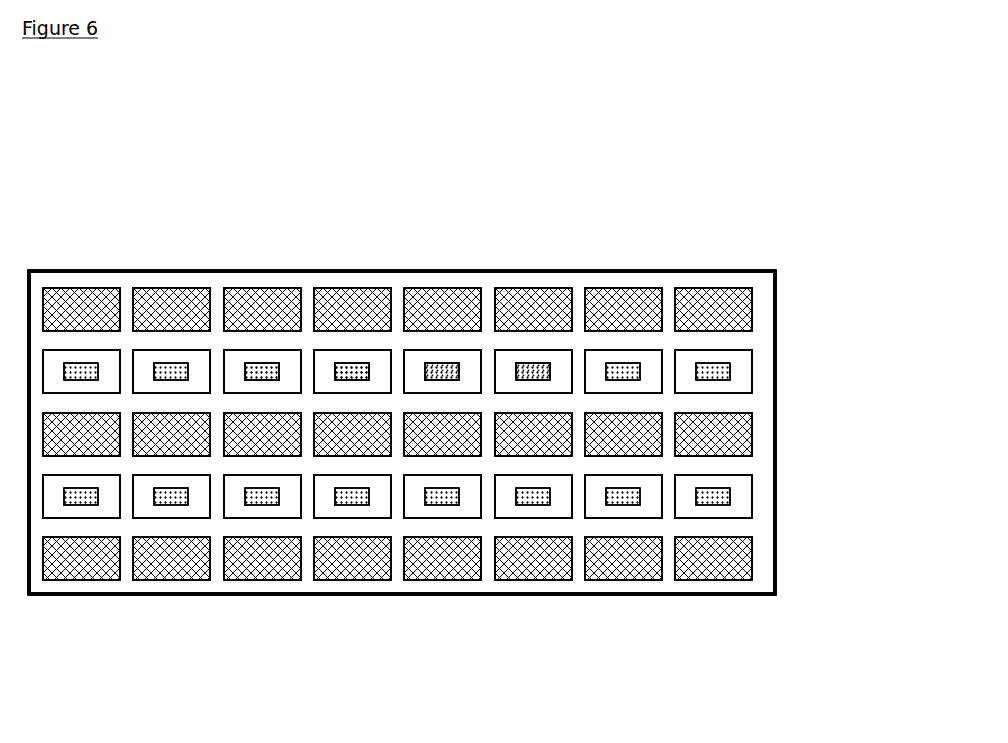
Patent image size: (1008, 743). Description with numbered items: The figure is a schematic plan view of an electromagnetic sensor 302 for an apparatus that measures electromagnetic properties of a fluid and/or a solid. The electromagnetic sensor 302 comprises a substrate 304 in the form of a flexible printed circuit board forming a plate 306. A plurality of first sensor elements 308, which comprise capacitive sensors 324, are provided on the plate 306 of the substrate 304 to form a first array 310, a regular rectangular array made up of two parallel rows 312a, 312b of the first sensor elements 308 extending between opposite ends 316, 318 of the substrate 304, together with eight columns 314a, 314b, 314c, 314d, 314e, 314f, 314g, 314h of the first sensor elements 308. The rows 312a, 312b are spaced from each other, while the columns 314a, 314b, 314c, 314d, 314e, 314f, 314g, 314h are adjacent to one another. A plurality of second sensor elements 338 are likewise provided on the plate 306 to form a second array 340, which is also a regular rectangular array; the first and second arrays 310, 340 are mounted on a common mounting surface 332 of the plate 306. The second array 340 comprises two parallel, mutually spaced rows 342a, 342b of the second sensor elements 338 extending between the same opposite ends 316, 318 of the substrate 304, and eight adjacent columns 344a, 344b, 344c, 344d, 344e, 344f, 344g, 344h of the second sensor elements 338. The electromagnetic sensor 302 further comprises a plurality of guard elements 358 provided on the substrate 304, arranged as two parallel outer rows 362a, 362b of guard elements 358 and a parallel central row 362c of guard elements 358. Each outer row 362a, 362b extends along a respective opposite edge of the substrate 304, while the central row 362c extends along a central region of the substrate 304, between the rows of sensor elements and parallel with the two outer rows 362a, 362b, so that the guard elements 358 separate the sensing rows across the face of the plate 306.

The electromagnetic sensor 302 is at (50, 120).
The substrate 304 is at (148, 281).
The plate 306 is at (200, 277).
The first sensor elements 308 is at (233, 360).
The first array 310 is at (380, 357).
The row of the first sensor elements 312a is at (479, 373).
The row of the first sensor elements 312b is at (477, 496).
The column of the first sensor elements 314a is at (81, 493).
The column of the first sensor elements 314b is at (171, 493).
The column of the first sensor elements 314c is at (262, 493).
The column of the first sensor elements 314d is at (352, 493).
The column of the first sensor elements 314e is at (442, 493).
The column of the first sensor elements 314f is at (533, 493).
The column of the first sensor elements 314g is at (623, 493).
The column of the first sensor elements 314h is at (713, 493).
The end of the substrate 316 is at (40, 288).
The end of the substrate 318 is at (767, 307).
The capacitive sensors 324 is at (322, 355).
The common mounting surface 332 is at (638, 278).
The second sensor elements 338 is at (445, 368).
The second array 340 is at (525, 370).
The row of the second sensor elements 342a is at (479, 373).
The row of the second sensor elements 342b is at (477, 496).
The column of the second sensor elements 344a is at (81, 493).
The column of the second sensor elements 344b is at (171, 493).
The column of the second sensor elements 344c is at (262, 493).
The column of the second sensor elements 344d is at (352, 493).
The column of the second sensor elements 344e is at (442, 493).
The column of the second sensor elements 344f is at (533, 493).
The column of the second sensor elements 344g is at (623, 493).
The column of the second sensor elements 344h is at (713, 493).
The guard elements 358 is at (738, 548).
The outer row of guard elements 362a is at (444, 300).
The outer row of guard elements 362b is at (443, 566).
The central row of guard elements 362c is at (445, 434).